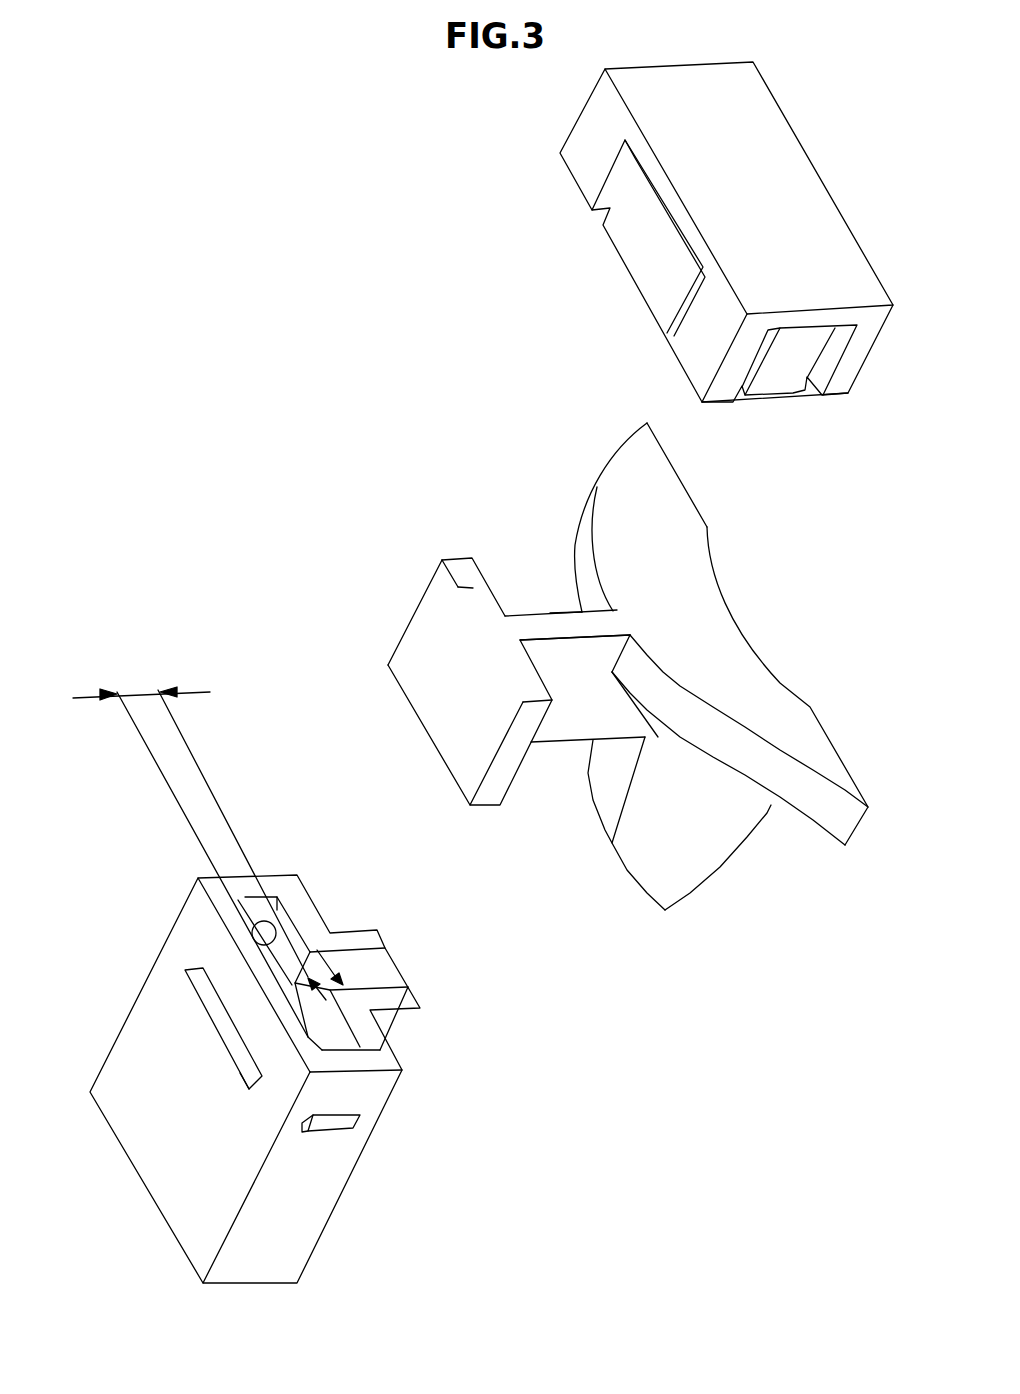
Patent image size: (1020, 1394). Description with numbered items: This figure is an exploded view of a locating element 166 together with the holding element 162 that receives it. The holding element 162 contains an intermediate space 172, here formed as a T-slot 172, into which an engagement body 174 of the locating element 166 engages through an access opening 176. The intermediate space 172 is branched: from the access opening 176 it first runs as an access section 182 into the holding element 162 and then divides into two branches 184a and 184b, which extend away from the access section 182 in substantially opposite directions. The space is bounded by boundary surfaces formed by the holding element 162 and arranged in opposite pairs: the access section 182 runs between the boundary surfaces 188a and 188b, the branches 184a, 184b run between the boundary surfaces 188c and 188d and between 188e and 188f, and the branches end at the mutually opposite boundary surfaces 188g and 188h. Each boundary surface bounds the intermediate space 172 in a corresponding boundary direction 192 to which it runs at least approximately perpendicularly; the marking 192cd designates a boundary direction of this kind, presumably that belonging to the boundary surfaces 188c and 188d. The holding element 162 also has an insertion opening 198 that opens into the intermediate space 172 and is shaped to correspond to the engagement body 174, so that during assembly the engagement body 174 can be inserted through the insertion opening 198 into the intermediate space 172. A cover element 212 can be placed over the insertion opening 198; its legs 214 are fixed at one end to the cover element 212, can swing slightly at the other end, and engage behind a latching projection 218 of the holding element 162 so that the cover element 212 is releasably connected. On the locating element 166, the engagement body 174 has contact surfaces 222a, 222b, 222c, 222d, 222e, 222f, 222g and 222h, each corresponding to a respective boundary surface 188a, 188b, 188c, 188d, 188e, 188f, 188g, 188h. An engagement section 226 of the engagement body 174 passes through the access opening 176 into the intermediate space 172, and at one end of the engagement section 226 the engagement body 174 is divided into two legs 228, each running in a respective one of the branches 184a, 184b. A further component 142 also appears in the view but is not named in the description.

The cover element 212 is at (753, 112).
The legs 214 is at (774, 384).
The curved housing wall 142 is at (677, 586).
The locating element 166 is at (570, 630).
The engagement section 226 is at (552, 617).
The contact surface 222a is at (525, 613).
The contact surface 222b is at (598, 690).
The contact surface 222c is at (501, 603).
The contact surface 222d is at (408, 643).
The contact surface 222e is at (540, 685).
The contact surface 222f is at (455, 722).
The contact surface 222g is at (512, 750).
The contact surface 222h is at (458, 558).
The legs 228 is at (473, 588).
The engagement body 174 is at (455, 690).
The holding element 162 is at (287, 1235).
The intermediate space 172 is at (335, 1047).
The access opening 176 is at (383, 972).
The access section 182 is at (340, 967).
The branch 184a is at (262, 895).
The branch 184b is at (342, 1028).
The boundary surface 188a is at (377, 965).
The boundary surface 188b is at (360, 1000).
The boundary surface 188c is at (312, 942).
The boundary surface 188d is at (303, 947).
The boundary surface 188e is at (342, 1020).
The boundary surface 188f is at (312, 1030).
The boundary surface 188g is at (360, 1047).
The boundary surface 188h is at (248, 898).
The boundary direction 192 is at (300, 978).
The slider travel distance 192cd is at (142, 688).
The insertion opening 198 is at (350, 1052).
The latching projection 218 is at (225, 1027).